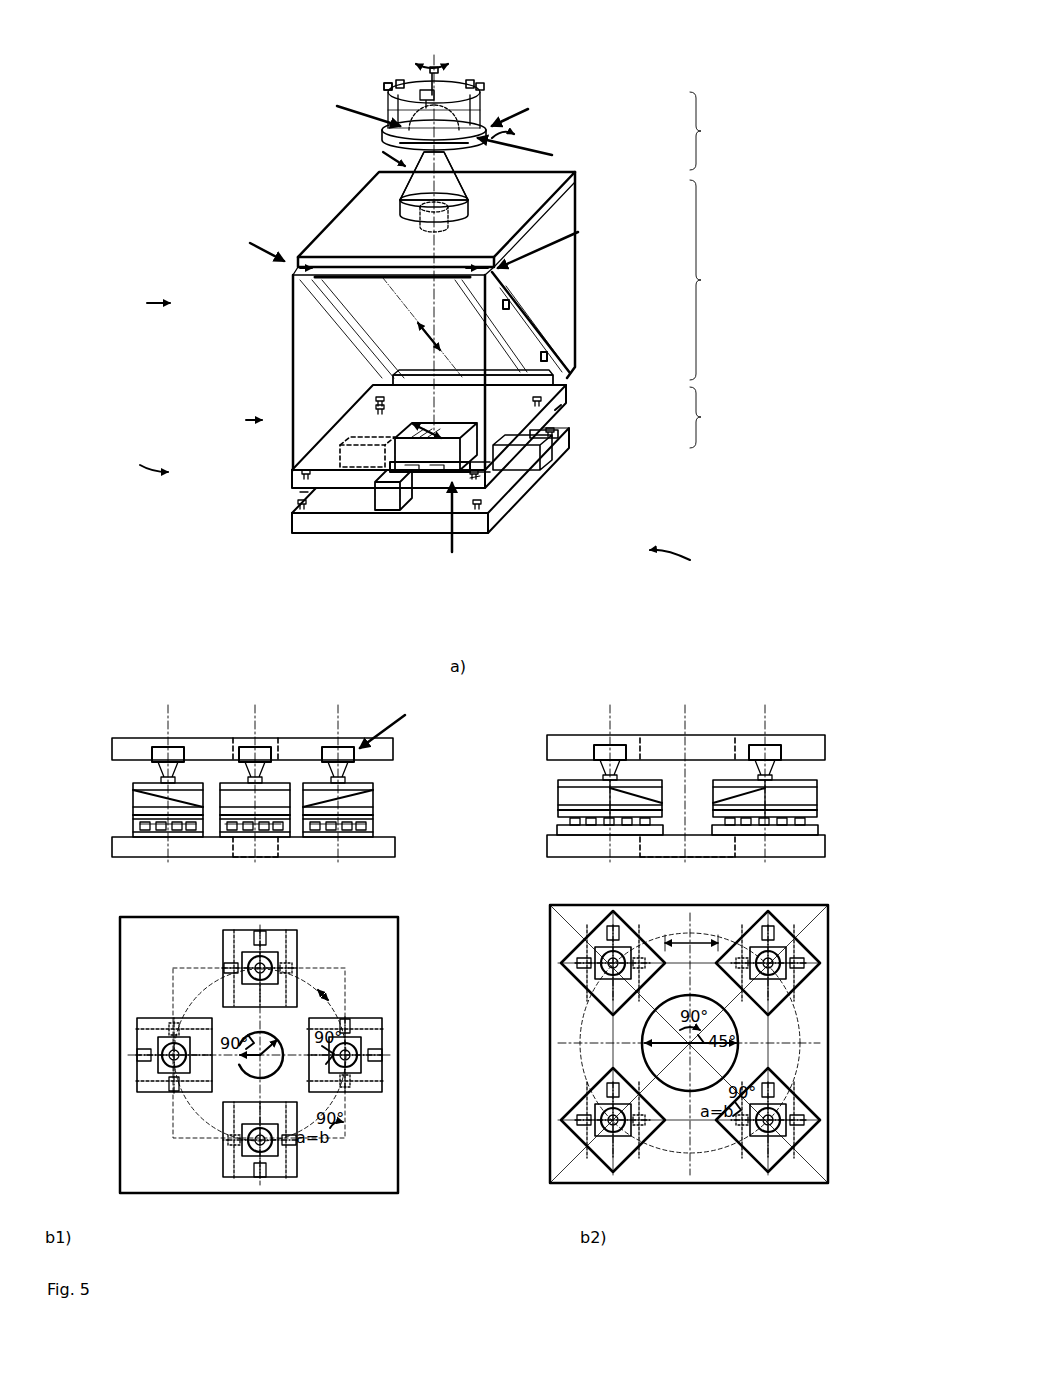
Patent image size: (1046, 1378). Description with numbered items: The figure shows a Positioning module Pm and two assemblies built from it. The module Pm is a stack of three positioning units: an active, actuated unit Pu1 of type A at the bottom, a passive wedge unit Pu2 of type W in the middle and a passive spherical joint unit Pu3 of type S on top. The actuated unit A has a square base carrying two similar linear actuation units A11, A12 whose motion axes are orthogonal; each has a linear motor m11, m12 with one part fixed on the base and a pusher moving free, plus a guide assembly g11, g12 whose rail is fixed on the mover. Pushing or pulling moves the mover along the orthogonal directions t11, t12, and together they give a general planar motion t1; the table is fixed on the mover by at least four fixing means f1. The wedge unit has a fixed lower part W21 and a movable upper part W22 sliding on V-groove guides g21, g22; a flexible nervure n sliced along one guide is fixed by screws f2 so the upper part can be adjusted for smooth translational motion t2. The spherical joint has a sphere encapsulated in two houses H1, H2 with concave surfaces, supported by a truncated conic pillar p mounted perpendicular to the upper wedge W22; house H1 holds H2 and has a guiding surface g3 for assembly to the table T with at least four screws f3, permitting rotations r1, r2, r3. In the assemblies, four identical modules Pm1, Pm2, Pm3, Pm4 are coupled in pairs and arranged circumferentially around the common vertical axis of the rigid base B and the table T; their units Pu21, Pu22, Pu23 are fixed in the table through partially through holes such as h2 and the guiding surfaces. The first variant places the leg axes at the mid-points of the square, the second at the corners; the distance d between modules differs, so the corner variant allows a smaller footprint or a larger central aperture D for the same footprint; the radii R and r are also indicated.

The spherical joint S is at (450, 103).
The wedge W is at (143, 316).
The actuated unit A is at (142, 459).
The first positioning unit Pu1 is at (718, 417).
The second positioning unit Pu2 is at (717, 280).
The third positioning unit Pu3 is at (715, 131).
The lower wedge part W21 is at (335, 372).
The upper wedge part W22 is at (560, 217).
The wedge guide g21 is at (520, 318).
The wedge guide g22 is at (345, 317).
The flexible nervure n is at (505, 275).
The first house H1 is at (470, 104).
The second house H2 is at (390, 141).
The guiding surface g3 is at (519, 113).
The truncated conic pillar p is at (450, 196).
The fixing screws f3 is at (384, 85).
The rotation r1 is at (383, 158).
The rotation r2 is at (506, 141).
The rotation r3 is at (436, 62).
The planar motion t1 is at (427, 420).
The translational motion t2 is at (434, 334).
The second linear actuation unit A12 is at (466, 452).
The first linear actuation unit A11 is at (397, 578).
The linear actuated motor m11 is at (372, 510).
The linear actuated motor m12 is at (548, 460).
The orthogonal direction t11 is at (417, 498).
The orthogonal direction t12 is at (533, 451).
The guide assembly g11 is at (445, 478).
The guide assembly g12 is at (512, 483).
The fixing means f1 is at (300, 530).
The fixing means f2 is at (290, 438).
The table T is at (230, 752).
The rigid base B is at (306, 845).
The partially through hole h2 is at (394, 728).
The first positioning unit Pu21 is at (372, 822).
The second positioning unit Pu22 is at (372, 800).
The third positioning unit Pu23 is at (347, 773).
The positioning module Pm1 is at (243, 1172).
The positioning module Pm2 is at (380, 1072).
The positioning module Pm3 is at (276, 940).
The positioning module Pm4 is at (142, 1038).
The positioning module Pm is at (684, 559).
The central aperture D is at (465, 1054).
The radius R is at (721, 1042).
The radius r is at (277, 1044).
The distance between modules d is at (518, 961).